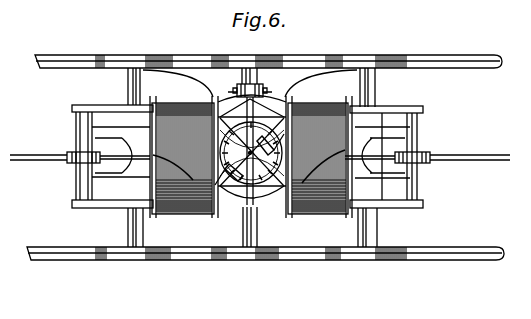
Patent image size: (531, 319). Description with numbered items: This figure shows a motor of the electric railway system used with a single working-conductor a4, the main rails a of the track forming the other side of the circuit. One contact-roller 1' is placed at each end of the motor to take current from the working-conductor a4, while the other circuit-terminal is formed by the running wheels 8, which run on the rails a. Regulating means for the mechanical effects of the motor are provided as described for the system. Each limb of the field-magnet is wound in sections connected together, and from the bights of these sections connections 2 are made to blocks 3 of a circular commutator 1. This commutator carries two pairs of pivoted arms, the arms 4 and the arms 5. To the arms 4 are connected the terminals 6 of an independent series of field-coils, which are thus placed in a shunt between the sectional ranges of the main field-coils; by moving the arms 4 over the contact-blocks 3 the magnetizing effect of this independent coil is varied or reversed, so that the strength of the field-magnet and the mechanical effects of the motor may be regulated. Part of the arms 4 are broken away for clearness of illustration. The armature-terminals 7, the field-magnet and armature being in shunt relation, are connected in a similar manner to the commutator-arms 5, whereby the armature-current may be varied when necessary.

The main rails of the track a is at (265, 150).
The single working-conductor a4 is at (427, 156).
The commutator wheel 1 is at (251, 153).
The contact-roller 1' is at (80, 156).
The connections 2 is at (252, 146).
The blocks 3 is at (249, 159).
The pivoted arms 4 is at (249, 158).
The pivoted arms 5 is at (253, 151).
The terminals of independent field-coils 6 is at (215, 99).
The armature-terminals 7 is at (234, 89).
The running wheels 8 is at (250, 83).